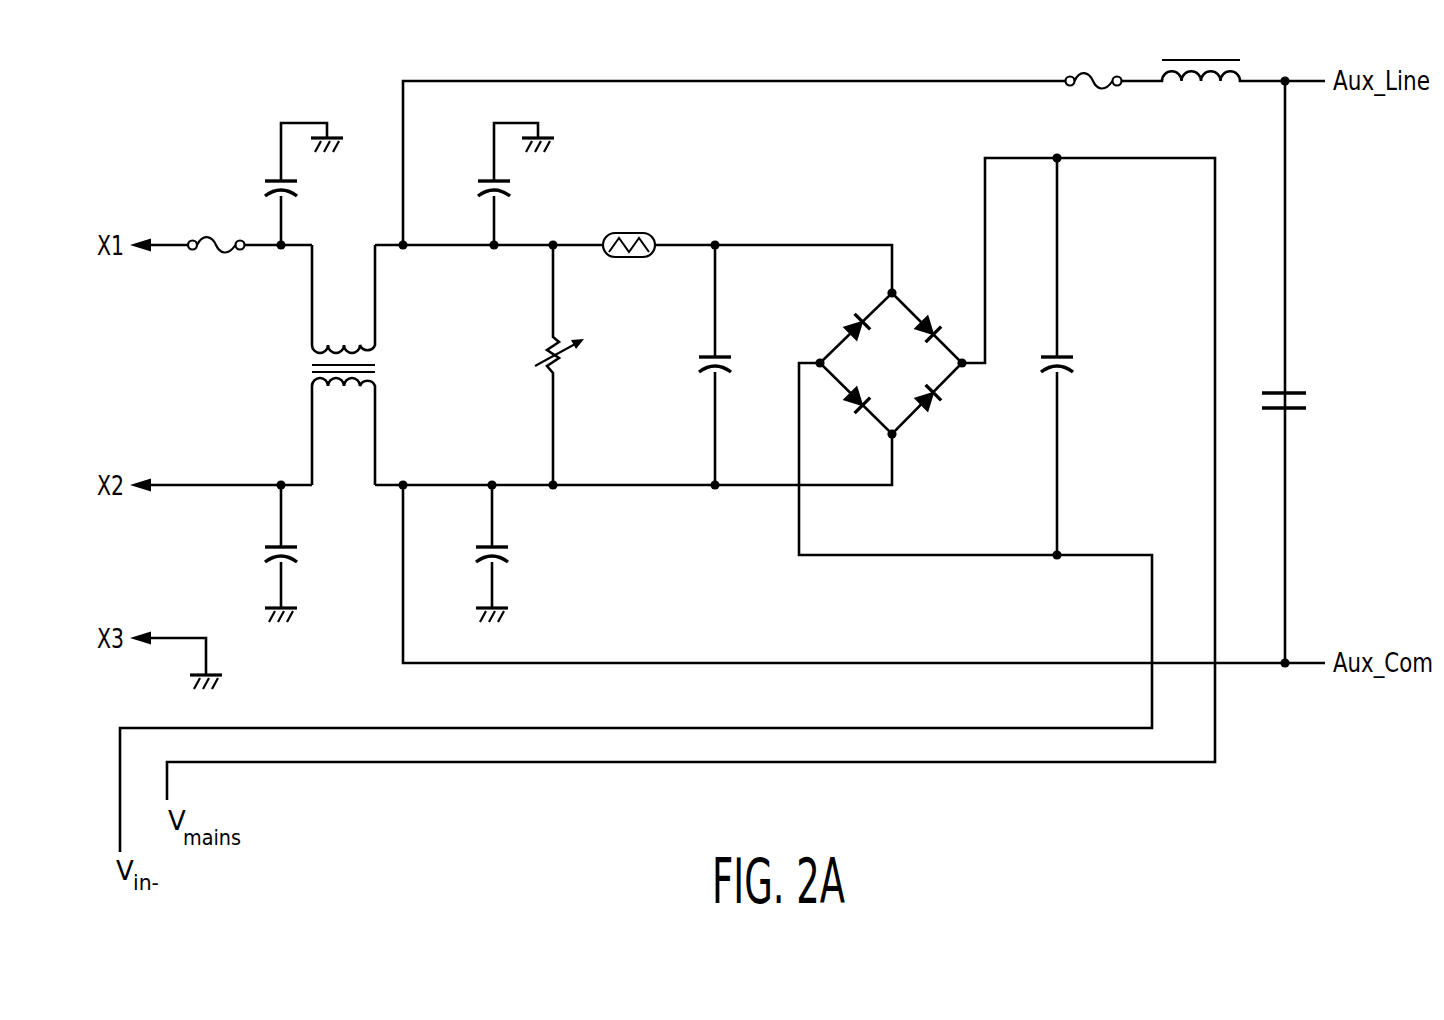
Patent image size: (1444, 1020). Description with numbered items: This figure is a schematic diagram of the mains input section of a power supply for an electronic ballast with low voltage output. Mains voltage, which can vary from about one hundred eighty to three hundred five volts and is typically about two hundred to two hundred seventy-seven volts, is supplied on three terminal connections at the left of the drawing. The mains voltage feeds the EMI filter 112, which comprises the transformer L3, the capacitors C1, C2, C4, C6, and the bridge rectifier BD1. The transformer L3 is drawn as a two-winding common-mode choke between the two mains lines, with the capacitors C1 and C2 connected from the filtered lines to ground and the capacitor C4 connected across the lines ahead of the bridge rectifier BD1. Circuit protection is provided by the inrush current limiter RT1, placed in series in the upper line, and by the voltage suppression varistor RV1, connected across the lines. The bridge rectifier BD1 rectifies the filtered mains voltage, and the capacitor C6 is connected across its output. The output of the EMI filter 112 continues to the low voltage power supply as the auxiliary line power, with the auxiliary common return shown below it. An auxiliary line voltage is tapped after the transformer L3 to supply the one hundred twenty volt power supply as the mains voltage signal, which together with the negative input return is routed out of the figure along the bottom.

The EMI filter 112 is at (733, 124).
The transformer L3 is at (346, 345).
The capacitor C1 is at (481, 188).
The capacitor C2 is at (508, 551).
The capacitor C4 is at (699, 364).
The capacitor C6 is at (1075, 364).
The voltage suppression varistor RV1 is at (540, 354).
The inrush current limiter RT1 is at (631, 233).
The bridge rectifier BD1 is at (890, 373).